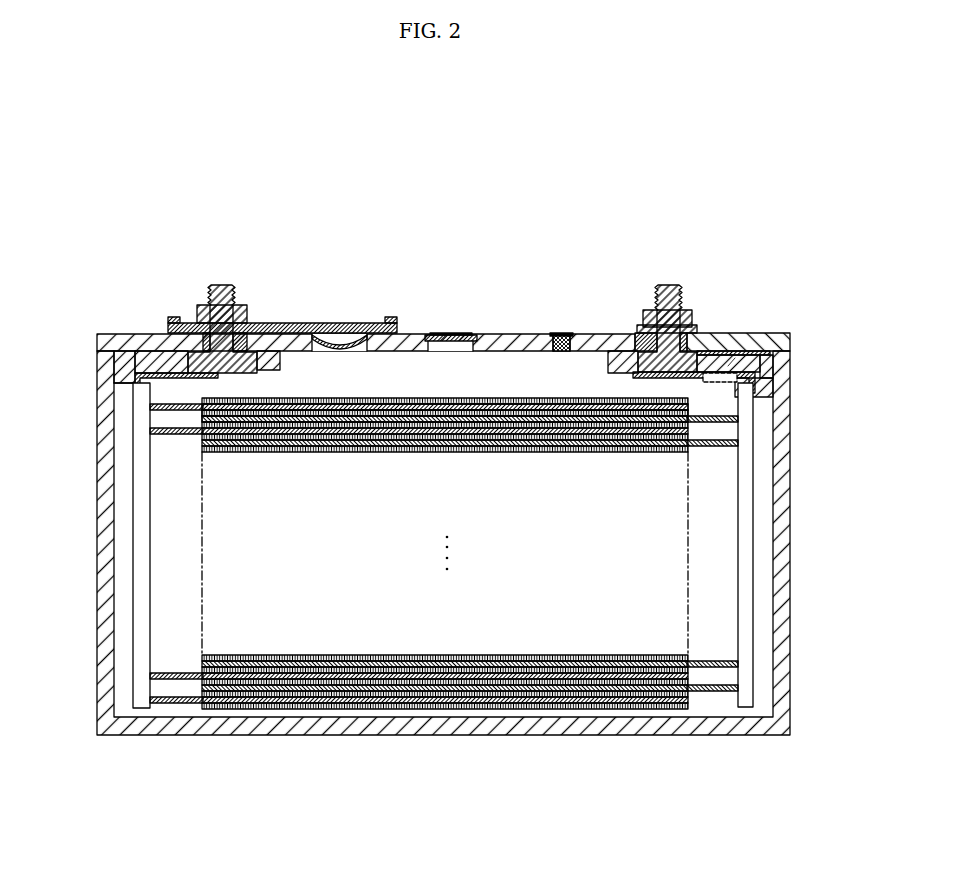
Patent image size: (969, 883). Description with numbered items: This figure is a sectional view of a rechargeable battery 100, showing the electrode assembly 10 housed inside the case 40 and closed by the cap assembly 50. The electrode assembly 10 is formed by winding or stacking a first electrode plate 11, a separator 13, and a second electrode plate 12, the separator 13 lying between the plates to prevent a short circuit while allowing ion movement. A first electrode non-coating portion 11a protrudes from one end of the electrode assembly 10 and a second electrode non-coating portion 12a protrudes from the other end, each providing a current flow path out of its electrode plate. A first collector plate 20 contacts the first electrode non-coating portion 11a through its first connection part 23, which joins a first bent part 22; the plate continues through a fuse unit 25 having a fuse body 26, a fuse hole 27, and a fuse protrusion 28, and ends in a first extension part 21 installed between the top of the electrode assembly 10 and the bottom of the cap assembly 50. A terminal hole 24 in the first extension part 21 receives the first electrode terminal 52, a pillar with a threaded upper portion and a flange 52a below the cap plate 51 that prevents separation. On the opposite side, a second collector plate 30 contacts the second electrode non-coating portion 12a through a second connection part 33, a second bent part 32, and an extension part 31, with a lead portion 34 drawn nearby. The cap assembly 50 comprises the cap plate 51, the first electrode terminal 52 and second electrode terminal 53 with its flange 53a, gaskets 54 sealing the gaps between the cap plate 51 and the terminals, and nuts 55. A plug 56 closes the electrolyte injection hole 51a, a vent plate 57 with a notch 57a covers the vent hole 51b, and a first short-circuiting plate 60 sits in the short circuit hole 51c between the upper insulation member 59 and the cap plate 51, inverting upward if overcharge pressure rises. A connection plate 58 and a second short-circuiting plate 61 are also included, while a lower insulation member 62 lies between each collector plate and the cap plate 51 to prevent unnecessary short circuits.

The rechargeable battery 100 is at (752, 205).
The electrode assembly 10 is at (536, 713).
The first electrode plate 11 is at (610, 706).
The first electrode non-coating portion 11a is at (710, 692).
The second electrode plate 12 is at (318, 706).
The second electrode non-coating portion 12a is at (180, 704).
The separator 13 is at (462, 695).
The first collector plate 20 is at (757, 490).
The first extension part 21 is at (700, 350).
The first bent part 22 is at (785, 357).
The first connection part 23 is at (755, 560).
The terminal hole 24 is at (700, 384).
The fuse unit 25 is at (745, 350).
The fuse body 26 is at (772, 347).
The fuse hole 27 is at (735, 357).
The fuse protrusion 28 is at (737, 380).
The second collector plate 30 is at (130, 490).
The first extension part 31 is at (170, 317).
The second bent part 32 is at (108, 338).
The second connection part 33 is at (135, 447).
The lead tab 34 is at (220, 379).
The case 40 is at (775, 440).
The cap assembly 50 is at (520, 248).
The cap plate 51 is at (504, 334).
The electrolyte injection hole 51a is at (556, 351).
The vent hole 51b is at (445, 351).
The short circuit hole 51c is at (350, 351).
The first electrode terminal 52 is at (670, 285).
The flange 52a is at (612, 365).
The second electrode terminal 53 is at (222, 285).
The flange of bolt 53a is at (282, 370).
The gasket 54 is at (200, 335).
The nut 55 is at (240, 305).
The plug 56 is at (557, 333).
The vent plate 57 is at (465, 335).
The notch 57a is at (440, 334).
The connection plate 58 is at (692, 328).
The upper insulation member 59 is at (390, 317).
The first short-circuiting plate 60 is at (340, 342).
The second short-circuiting plate 61 is at (285, 323).
The lower insulation member 62 is at (114, 368).